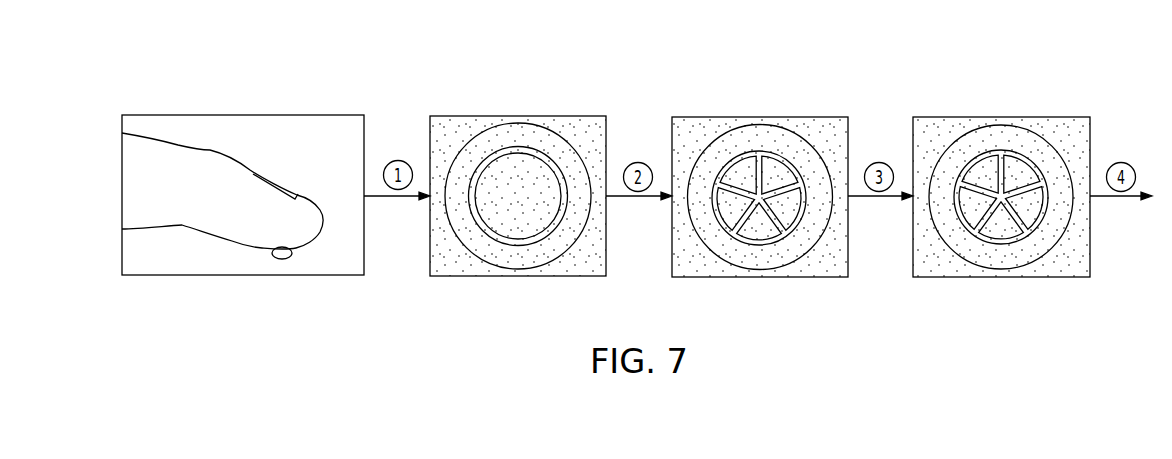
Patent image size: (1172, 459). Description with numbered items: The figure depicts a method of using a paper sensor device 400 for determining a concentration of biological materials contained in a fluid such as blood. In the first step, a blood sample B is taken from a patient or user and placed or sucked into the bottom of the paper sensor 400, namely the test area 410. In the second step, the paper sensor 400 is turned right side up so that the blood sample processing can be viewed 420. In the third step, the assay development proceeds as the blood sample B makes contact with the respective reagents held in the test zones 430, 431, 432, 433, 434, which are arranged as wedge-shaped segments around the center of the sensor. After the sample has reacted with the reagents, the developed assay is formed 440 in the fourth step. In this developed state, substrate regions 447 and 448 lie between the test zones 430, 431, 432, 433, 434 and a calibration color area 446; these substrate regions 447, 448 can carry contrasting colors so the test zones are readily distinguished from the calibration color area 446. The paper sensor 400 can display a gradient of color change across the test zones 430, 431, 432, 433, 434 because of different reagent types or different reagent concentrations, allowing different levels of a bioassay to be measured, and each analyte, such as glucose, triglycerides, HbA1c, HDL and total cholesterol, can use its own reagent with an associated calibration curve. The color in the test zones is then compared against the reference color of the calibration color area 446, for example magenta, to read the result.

The blood sample B is at (283, 259).
The paper sensor device 400 is at (490, 85).
The test area 410 is at (502, 207).
The blood sample processing view 420 is at (702, 87).
The test zone 430 is at (767, 163).
The test zone 431 is at (787, 220).
The test zone 432 is at (760, 233).
The test zone 433 is at (733, 218).
The test zone 434 is at (750, 167).
The developed assay 440 is at (1026, 153).
The calibration color area 446 is at (1072, 138).
The substrate region 447 is at (1032, 190).
The substrate region 448 is at (995, 147).